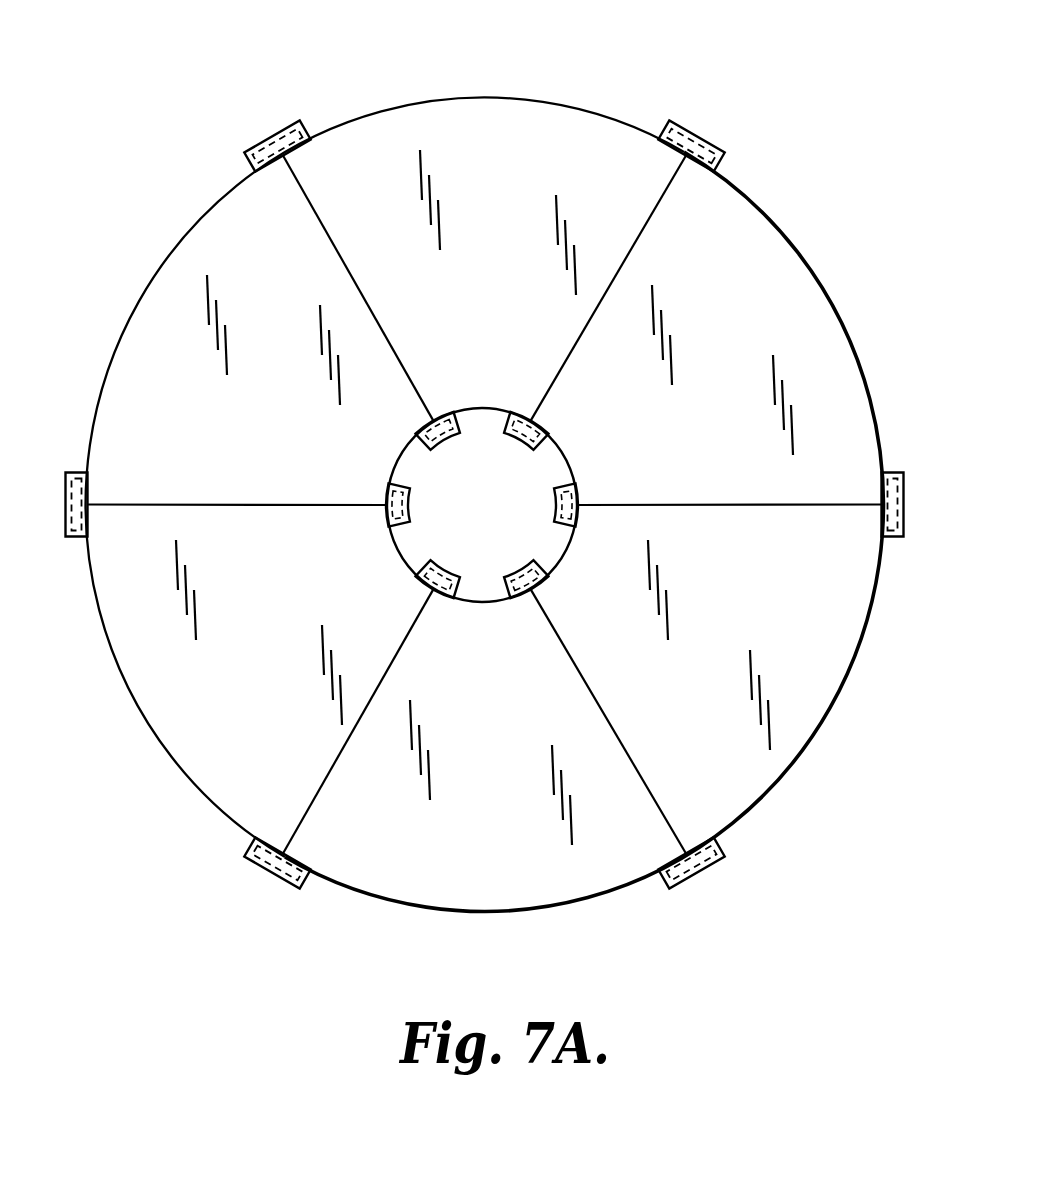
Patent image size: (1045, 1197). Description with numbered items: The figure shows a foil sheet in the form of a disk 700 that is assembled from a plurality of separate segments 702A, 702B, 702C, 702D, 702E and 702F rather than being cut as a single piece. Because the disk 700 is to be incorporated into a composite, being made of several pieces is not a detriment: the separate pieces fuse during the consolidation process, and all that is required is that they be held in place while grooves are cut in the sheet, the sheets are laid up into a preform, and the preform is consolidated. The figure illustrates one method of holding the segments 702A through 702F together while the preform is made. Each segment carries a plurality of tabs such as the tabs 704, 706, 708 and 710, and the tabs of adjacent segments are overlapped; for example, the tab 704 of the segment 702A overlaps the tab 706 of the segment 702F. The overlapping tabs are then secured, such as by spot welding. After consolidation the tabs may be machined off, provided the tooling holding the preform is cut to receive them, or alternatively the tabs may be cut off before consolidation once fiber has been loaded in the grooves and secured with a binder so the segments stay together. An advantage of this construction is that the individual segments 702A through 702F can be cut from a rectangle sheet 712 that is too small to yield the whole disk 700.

The disk 700 is at (498, 90).
The segment 702A is at (596, 108).
The segment 702B is at (814, 299).
The segment 702C is at (790, 762).
The segment 702D is at (538, 893).
The segment 702E is at (215, 783).
The segment 702F is at (160, 290).
The tab 704 is at (289, 118).
The tab 706 is at (238, 161).
The tab 708 is at (468, 411).
The tab 710 is at (414, 446).
The rectangle sheet 712 is at (797, 237).